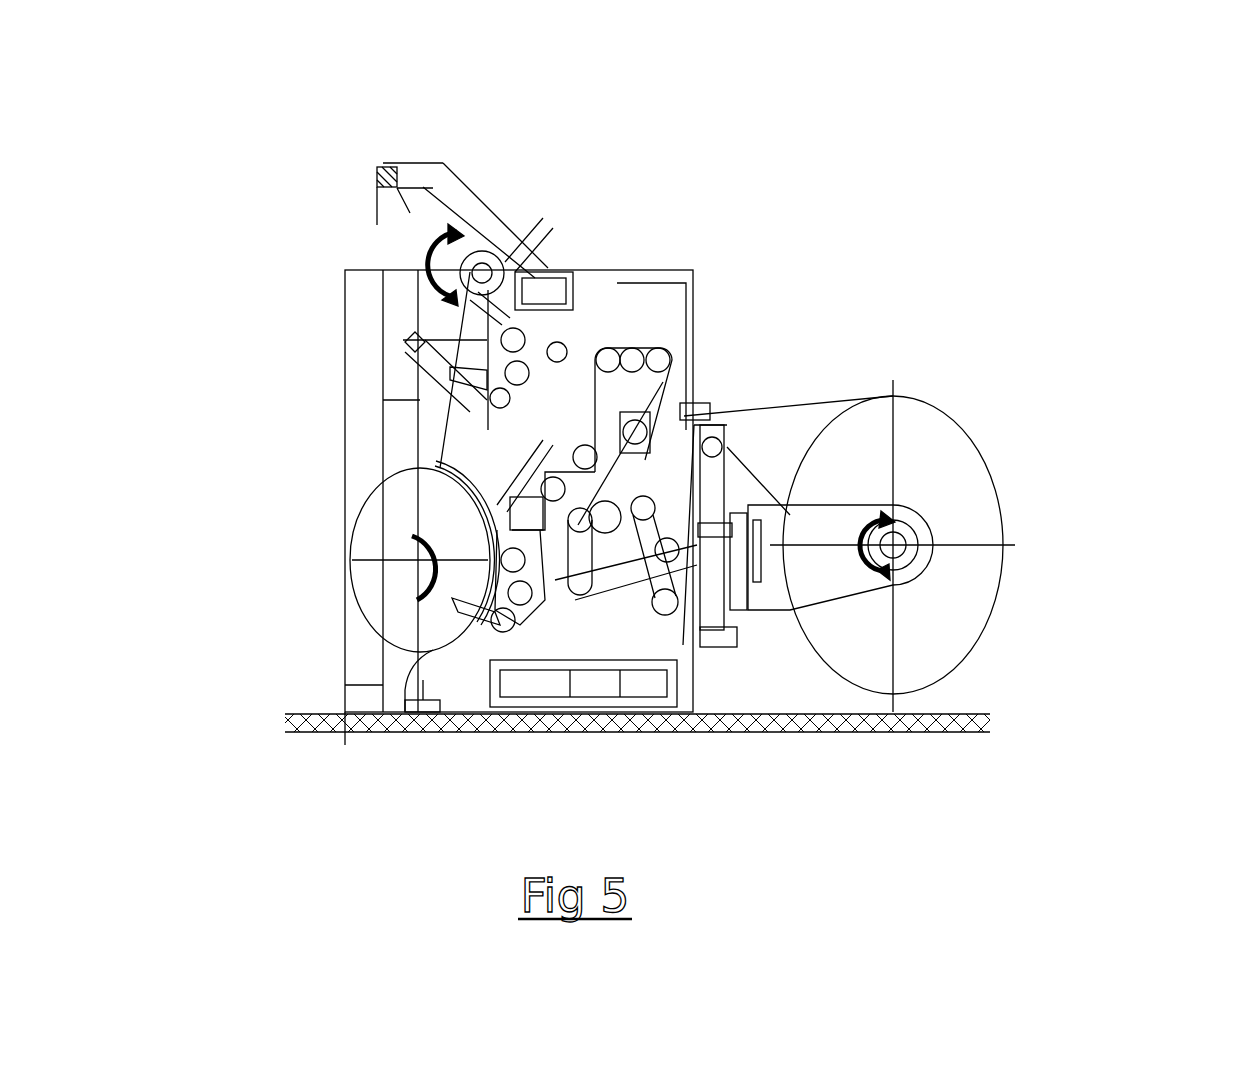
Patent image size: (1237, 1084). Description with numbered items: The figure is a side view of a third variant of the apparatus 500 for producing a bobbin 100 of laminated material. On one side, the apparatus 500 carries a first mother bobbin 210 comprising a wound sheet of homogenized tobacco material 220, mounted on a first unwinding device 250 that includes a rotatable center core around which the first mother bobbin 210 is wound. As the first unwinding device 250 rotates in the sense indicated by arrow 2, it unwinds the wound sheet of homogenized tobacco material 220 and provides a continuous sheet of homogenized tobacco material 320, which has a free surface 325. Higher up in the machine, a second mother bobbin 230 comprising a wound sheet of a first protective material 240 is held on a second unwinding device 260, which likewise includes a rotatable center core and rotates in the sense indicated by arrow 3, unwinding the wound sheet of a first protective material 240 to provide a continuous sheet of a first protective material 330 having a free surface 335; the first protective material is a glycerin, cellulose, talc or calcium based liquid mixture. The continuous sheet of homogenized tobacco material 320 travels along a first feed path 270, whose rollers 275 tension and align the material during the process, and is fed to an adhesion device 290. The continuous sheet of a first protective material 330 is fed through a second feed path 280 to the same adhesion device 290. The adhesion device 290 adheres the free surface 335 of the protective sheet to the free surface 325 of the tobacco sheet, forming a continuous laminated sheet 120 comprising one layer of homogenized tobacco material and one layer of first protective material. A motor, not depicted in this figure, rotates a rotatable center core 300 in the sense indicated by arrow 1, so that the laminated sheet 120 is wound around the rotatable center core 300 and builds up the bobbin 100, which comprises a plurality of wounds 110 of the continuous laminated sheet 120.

The arrow 1 is at (420, 553).
The arrow 2 is at (870, 545).
The arrow 3 is at (442, 262).
The bobbin 100 is at (398, 466).
The wounds 110 is at (397, 633).
The continuous laminated sheet 120 is at (432, 466).
The first mother bobbin 210 is at (907, 388).
The wound sheet of homogenized tobacco material 220 is at (945, 443).
The second mother bobbin 230 is at (496, 236).
The wound sheet of first protective material 240 is at (478, 262).
The first unwinding device 250 is at (893, 548).
The second unwinding device 260 is at (470, 262).
The first feed path 270 is at (682, 396).
The rollers 275 is at (652, 395).
The second feed path 280 is at (433, 390).
The adhesion device 290 is at (452, 463).
The rotatable center core 300 is at (412, 563).
The continuous sheet of homogenized tobacco material 320 is at (747, 413).
The free surface 325 is at (773, 413).
The continuous sheet of first protective material 330 is at (443, 327).
The free surface 335 is at (450, 383).
The apparatus 500 is at (1016, 186).